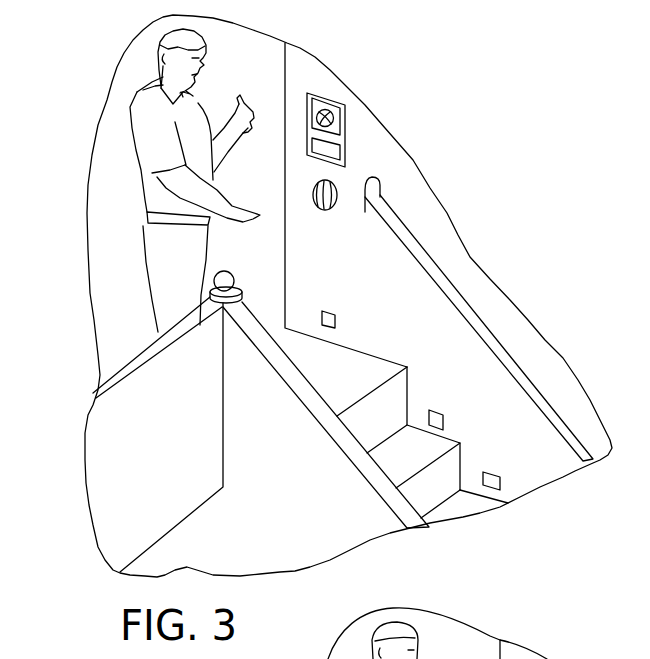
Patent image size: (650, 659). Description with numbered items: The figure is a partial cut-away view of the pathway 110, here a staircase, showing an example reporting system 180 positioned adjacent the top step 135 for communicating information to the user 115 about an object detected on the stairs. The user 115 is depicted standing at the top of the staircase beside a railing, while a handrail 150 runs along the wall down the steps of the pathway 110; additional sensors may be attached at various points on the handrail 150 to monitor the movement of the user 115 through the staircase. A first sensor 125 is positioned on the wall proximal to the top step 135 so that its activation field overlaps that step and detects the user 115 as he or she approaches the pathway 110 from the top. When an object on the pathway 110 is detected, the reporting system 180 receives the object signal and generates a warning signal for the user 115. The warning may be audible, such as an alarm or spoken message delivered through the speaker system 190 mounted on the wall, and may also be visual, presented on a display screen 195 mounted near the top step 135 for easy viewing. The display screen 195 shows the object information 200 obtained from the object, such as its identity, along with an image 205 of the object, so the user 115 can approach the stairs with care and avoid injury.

The pathway 110 is at (522, 473).
The user 115 is at (137, 117).
The first sensor 125 is at (327, 322).
The top step 135 is at (348, 373).
The handrail 150 is at (431, 268).
The reporting system 180 is at (375, 88).
The speaker system 190 is at (330, 198).
The display screen 195 is at (345, 117).
The object information 200 is at (340, 155).
The image 205 is at (313, 103).